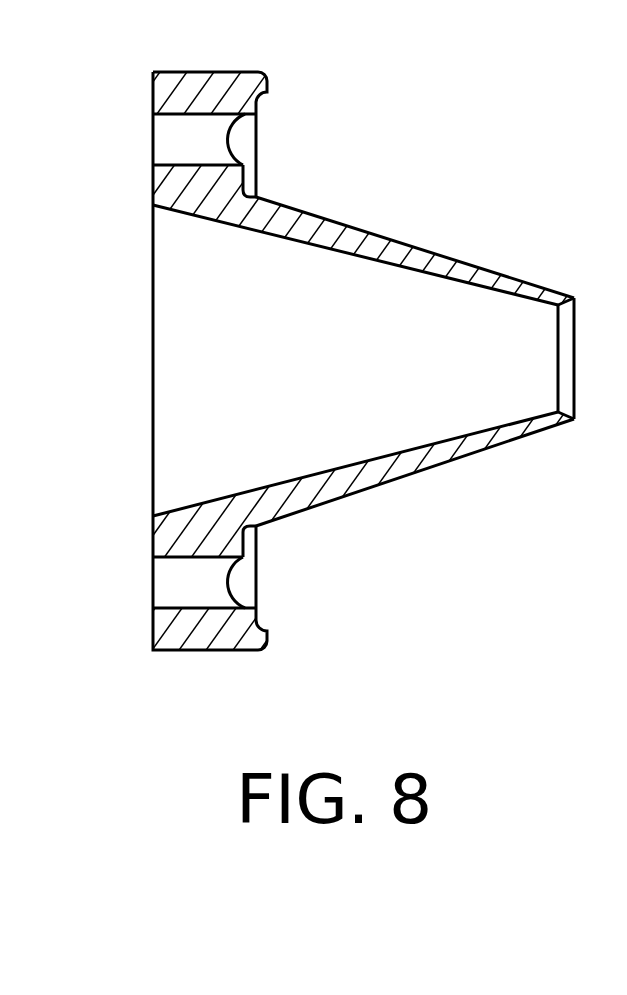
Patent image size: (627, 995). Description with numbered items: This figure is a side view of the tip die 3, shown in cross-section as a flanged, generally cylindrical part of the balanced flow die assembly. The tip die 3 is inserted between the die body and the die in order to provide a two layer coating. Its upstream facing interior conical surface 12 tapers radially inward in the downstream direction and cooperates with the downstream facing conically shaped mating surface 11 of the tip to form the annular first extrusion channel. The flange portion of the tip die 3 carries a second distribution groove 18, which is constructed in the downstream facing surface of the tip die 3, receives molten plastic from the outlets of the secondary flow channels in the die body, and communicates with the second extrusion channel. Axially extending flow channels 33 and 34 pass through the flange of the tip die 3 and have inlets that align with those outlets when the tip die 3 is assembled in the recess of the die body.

The tip die 3 is at (160, 537).
The conically shaped mating surface 11 is at (367, 257).
The upstream facing interior conical surface 12 is at (507, 280).
The second distribution groove 18 is at (247, 143).
The axially extending flow channel 33 is at (158, 146).
The axially extending flow channel 34 is at (158, 588).